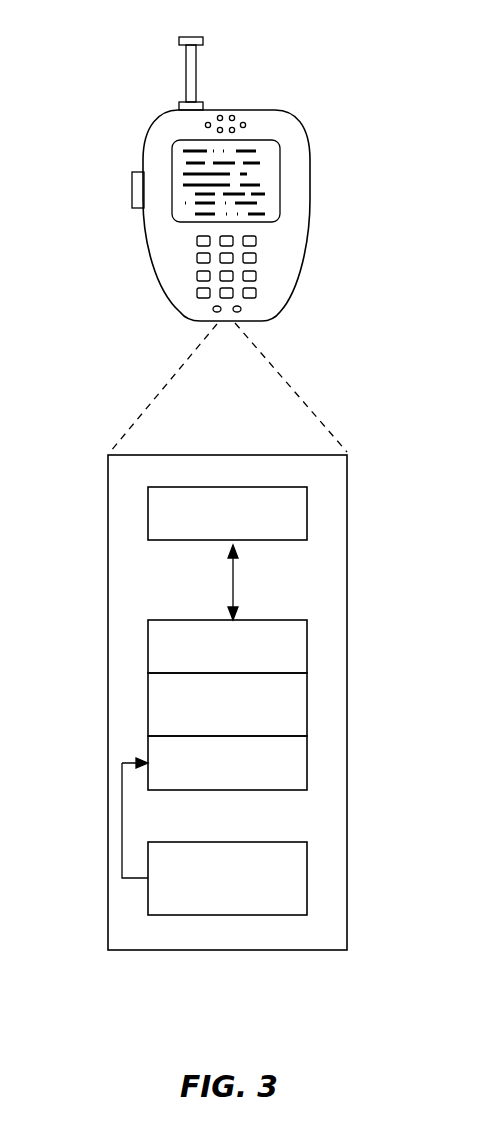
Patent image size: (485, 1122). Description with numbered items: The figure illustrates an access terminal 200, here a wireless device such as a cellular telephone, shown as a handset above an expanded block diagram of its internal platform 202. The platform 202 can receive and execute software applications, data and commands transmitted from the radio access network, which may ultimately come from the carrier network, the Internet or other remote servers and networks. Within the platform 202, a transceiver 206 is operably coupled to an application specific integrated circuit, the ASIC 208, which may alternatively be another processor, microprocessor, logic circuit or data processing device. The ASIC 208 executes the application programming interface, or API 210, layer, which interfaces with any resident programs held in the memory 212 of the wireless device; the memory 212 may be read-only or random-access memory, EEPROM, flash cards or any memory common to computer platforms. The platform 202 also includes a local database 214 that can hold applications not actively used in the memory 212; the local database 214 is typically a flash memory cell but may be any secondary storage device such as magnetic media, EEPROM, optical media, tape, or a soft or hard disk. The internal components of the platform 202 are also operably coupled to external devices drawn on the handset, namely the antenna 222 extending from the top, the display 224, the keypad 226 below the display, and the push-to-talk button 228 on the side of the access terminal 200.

The access terminal 200 is at (285, 298).
The platform 202 is at (108, 556).
The transceiver 206 is at (307, 510).
The application specific integrated circuit 208 is at (307, 647).
The application programming interface 210 is at (307, 702).
The memory 212 is at (307, 762).
The local database 214 is at (307, 876).
The antenna 222 is at (197, 62).
The display 224 is at (281, 182).
The keypad 226 is at (257, 258).
The push-to-talk button 228 is at (132, 190).